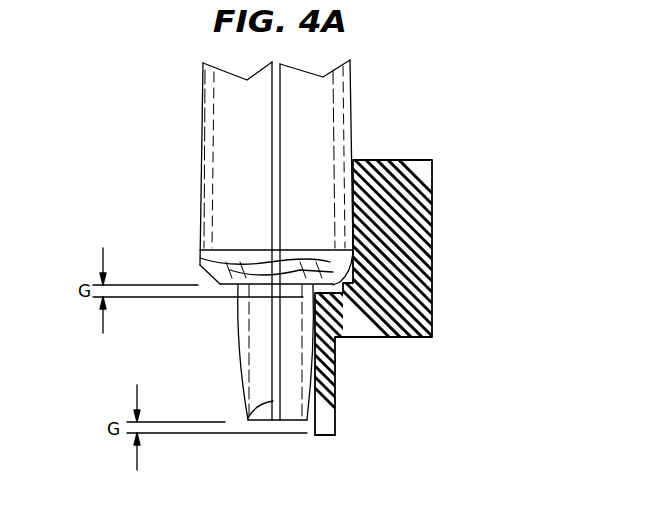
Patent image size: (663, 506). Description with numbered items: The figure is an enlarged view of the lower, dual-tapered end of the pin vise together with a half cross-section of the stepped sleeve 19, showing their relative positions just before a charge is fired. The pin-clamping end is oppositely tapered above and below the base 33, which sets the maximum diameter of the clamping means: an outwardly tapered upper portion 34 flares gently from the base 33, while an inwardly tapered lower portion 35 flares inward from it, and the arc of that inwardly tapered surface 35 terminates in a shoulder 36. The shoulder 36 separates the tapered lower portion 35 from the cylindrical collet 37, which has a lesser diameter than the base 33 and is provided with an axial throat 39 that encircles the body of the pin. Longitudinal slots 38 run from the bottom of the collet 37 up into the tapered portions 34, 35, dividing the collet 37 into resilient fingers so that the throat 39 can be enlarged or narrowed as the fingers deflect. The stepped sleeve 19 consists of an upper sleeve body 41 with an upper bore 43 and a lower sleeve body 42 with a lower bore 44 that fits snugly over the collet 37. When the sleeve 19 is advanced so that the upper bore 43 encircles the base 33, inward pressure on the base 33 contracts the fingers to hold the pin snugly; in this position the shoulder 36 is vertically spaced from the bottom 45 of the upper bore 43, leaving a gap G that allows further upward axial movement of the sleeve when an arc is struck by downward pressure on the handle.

The stepped sleeve 19 is at (435, 168).
The base 33 is at (350, 235).
The outwardly tapered upper portion 34 is at (352, 103).
The inwardly tapered lower portion 35 is at (340, 275).
The shoulder 36 is at (332, 268).
The collet 37 is at (238, 320).
The longitudinal slots 38 is at (248, 420).
The throat 39 is at (278, 422).
The upper sleeve body 41 is at (435, 200).
The lower sleeve body 42 is at (338, 372).
The upper bore 43 is at (317, 340).
The lower bore 44 is at (313, 428).
The bottom of the upper bore 45 is at (305, 290).